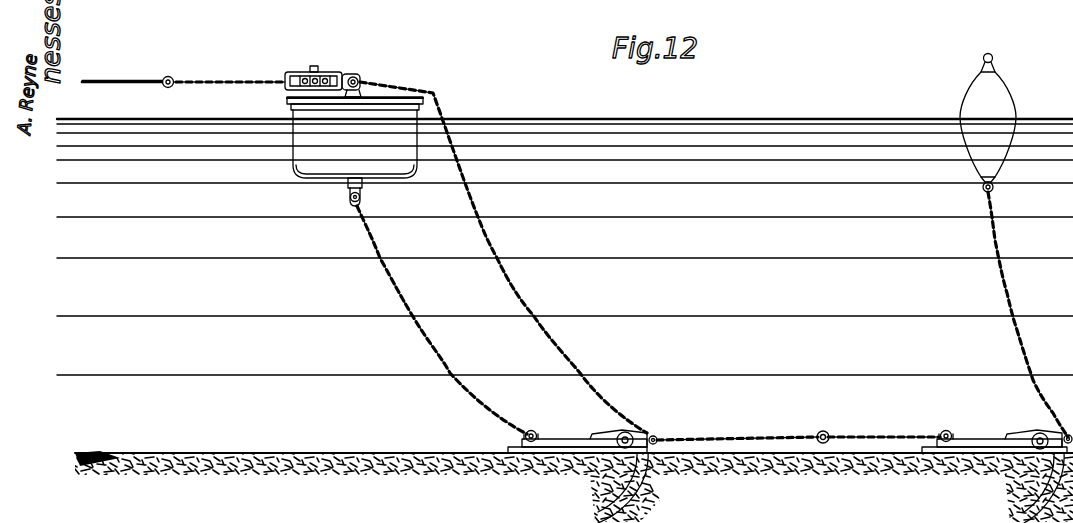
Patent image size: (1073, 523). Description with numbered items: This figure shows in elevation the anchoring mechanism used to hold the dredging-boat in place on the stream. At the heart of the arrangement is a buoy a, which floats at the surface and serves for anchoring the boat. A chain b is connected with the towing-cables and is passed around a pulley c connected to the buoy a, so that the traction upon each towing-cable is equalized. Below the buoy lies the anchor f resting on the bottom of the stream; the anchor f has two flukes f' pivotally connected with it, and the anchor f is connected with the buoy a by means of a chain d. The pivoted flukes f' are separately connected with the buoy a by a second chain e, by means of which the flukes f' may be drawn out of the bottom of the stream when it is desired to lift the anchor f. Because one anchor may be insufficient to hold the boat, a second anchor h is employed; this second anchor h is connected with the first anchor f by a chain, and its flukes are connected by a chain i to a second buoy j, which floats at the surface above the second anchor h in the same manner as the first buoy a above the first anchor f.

The buoy a is at (355, 151).
The chain b is at (183, 71).
The pulley c is at (323, 74).
The chain d is at (442, 320).
The chain e is at (503, 257).
The anchor f is at (582, 439).
The flukes f' is at (634, 488).
The second anchor h is at (997, 472).
The chain i is at (1028, 314).
The second buoy j is at (988, 123).